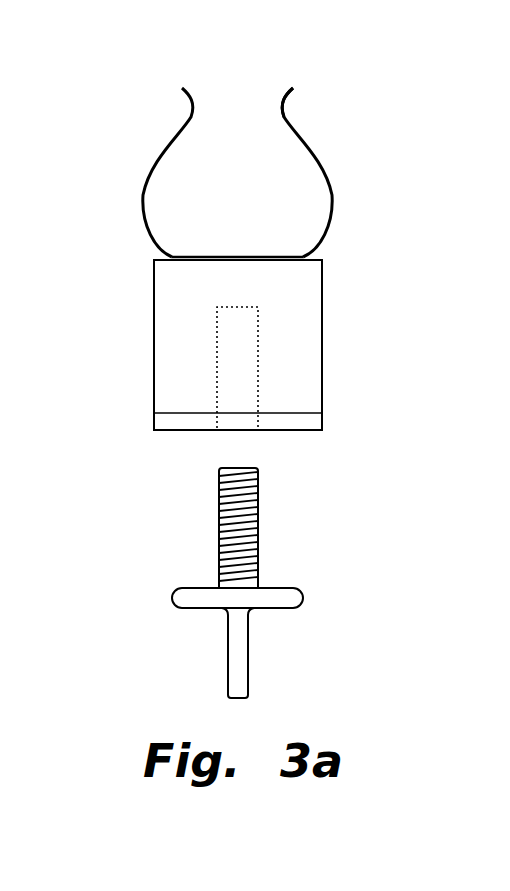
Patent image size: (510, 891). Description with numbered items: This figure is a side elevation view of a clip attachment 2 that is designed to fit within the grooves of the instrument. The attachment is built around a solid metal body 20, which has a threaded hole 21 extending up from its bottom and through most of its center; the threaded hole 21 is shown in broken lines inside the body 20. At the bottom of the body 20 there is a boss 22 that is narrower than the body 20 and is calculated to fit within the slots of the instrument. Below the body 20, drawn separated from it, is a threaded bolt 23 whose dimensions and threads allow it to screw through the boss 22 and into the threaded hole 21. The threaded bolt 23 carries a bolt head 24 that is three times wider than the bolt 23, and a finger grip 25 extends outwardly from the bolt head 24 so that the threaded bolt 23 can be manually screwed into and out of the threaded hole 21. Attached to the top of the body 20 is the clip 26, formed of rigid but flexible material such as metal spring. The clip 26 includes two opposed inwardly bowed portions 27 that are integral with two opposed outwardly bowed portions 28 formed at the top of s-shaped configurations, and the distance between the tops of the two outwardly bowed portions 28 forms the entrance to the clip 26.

The bulb assembly 2 is at (231, 133).
The solid metal body 20 is at (292, 359).
The threaded hole 21 is at (238, 365).
The boss 22 is at (308, 420).
The threaded bolt 23 is at (258, 515).
The bolt head 24 is at (293, 598).
The finger grip 25 is at (240, 667).
The clip 26 is at (143, 173).
The inwardly bowed portions 27 is at (328, 160).
The outwardly bowed portions 28 is at (295, 93).